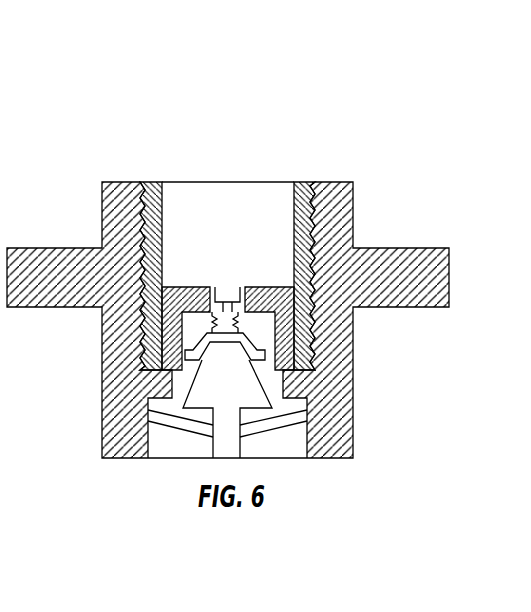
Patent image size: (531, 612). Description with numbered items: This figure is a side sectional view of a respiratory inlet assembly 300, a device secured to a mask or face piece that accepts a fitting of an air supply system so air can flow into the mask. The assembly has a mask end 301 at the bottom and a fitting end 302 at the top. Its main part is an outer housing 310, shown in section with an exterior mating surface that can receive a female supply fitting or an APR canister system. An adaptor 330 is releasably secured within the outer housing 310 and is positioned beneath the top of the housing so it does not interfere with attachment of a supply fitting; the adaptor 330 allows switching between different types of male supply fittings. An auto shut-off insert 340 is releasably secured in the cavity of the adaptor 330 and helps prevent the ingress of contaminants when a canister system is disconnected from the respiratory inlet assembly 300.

The respiratory inlet assembly 300 is at (370, 68).
The mask end 301 is at (420, 445).
The fitting end 302 is at (375, 202).
The outer housing 310 is at (102, 410).
The adaptor 330 is at (155, 182).
The auto shut-off insert 340 is at (258, 287).